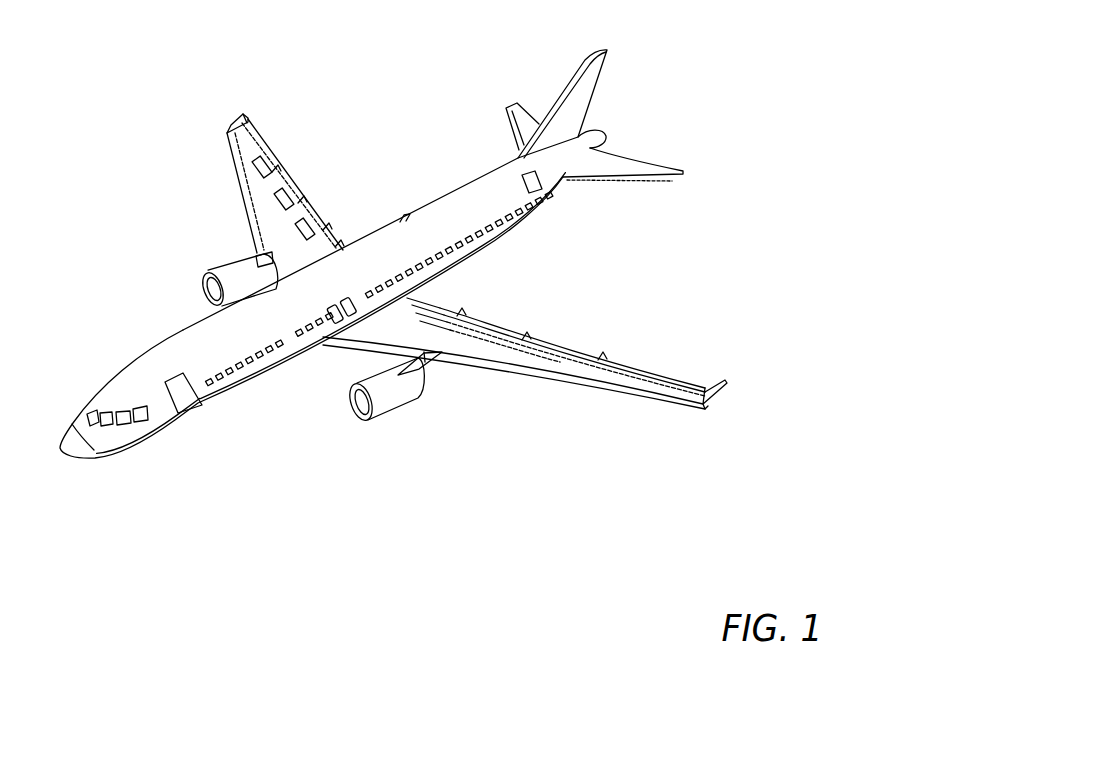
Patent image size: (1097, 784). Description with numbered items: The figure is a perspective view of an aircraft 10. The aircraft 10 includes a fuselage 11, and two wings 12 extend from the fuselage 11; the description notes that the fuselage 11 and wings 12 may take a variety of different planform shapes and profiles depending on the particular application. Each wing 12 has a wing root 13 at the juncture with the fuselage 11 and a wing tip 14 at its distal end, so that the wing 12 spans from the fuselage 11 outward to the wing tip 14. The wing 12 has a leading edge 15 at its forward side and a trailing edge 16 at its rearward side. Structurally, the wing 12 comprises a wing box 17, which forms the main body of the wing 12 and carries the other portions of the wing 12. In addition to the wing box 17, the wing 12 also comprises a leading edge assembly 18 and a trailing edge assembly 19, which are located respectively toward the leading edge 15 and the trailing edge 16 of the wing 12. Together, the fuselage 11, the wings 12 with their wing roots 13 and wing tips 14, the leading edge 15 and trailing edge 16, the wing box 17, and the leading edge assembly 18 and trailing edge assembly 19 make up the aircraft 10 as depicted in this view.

The aircraft 10 is at (692, 88).
The fuselage 11 is at (388, 232).
The wing 12 is at (627, 377).
The wing root 13 is at (348, 316).
The wing tip 14 is at (704, 398).
The leading edge 15 is at (530, 377).
The trailing edge 16 is at (557, 350).
The wing box 17 is at (271, 206).
The leading edge assembly 18 is at (236, 173).
The trailing edge assembly 19 is at (317, 226).